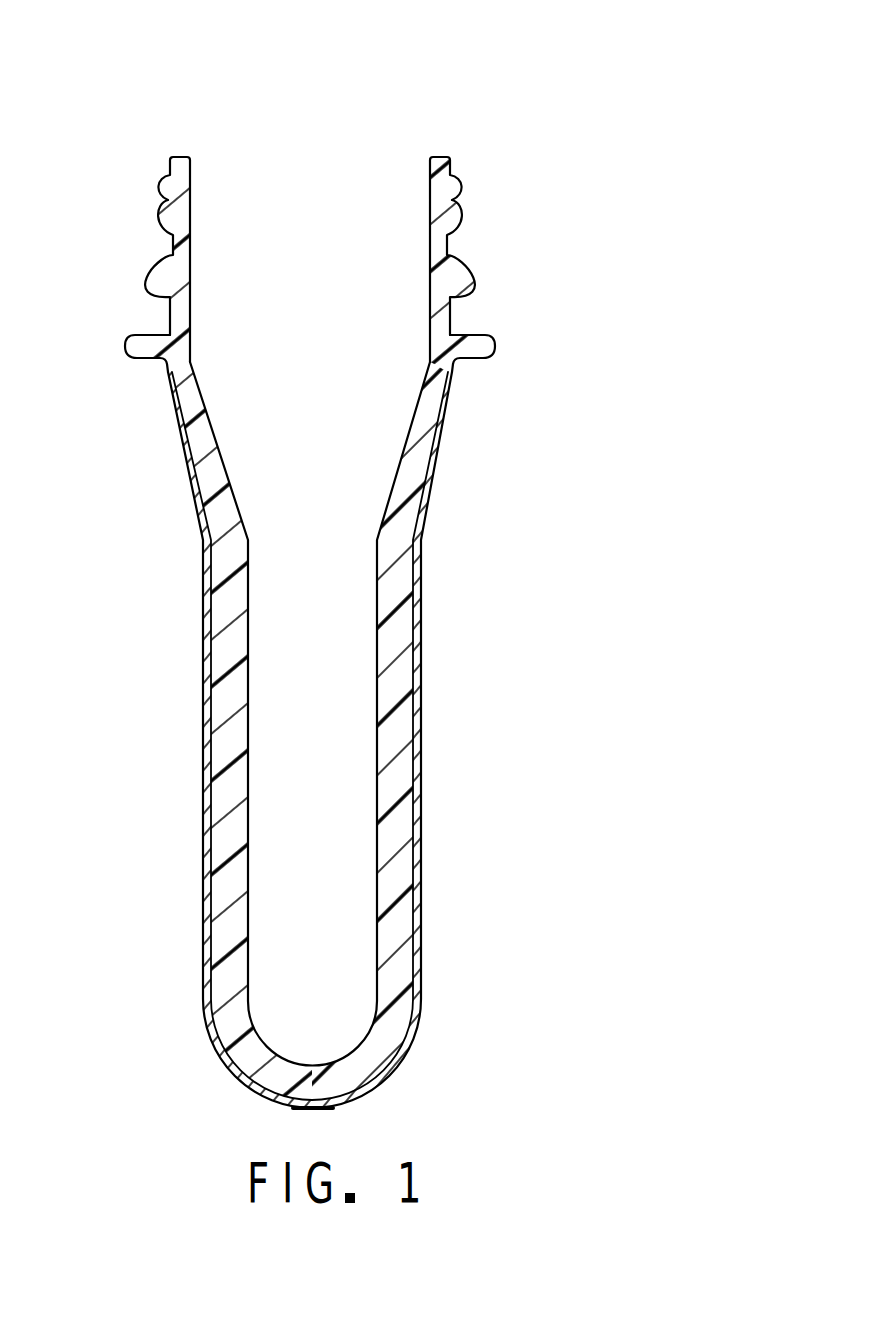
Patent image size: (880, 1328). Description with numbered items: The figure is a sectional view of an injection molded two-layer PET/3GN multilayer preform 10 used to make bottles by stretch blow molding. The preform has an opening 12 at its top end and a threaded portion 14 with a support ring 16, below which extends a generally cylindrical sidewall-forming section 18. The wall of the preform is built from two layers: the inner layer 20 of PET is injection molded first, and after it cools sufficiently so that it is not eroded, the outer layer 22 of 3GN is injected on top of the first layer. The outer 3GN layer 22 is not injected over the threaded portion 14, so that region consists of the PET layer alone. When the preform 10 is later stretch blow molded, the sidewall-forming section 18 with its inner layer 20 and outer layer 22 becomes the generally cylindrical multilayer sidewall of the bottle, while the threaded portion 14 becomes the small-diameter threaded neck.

The multilayer preform 10 is at (432, 569).
The opening 12 is at (413, 211).
The threaded portion 14 is at (555, 258).
The support ring 16 is at (496, 362).
The sidewall-forming section 18 is at (301, 735).
The inner layer 20 is at (375, 778).
The outer layer 22 is at (423, 785).